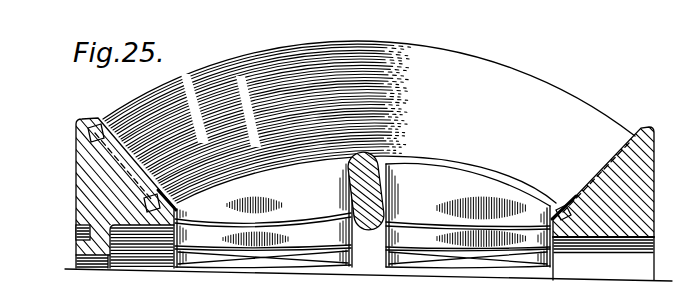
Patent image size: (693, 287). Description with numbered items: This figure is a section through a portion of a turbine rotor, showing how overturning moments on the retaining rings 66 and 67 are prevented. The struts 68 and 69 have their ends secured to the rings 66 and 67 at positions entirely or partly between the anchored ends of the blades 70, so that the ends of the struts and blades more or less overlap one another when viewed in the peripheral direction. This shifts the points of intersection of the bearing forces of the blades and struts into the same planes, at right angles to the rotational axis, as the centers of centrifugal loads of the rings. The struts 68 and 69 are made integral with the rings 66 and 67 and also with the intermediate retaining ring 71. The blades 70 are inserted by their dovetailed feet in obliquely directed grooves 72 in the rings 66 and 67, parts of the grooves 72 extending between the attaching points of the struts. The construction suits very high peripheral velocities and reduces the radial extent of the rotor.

The retaining ring 66 is at (93, 190).
The retaining ring 67 is at (643, 221).
The strut 68 is at (270, 204).
The strut 69 is at (462, 214).
The blade 70 is at (546, 93).
The intermediate retaining ring 71 is at (374, 190).
The groove 72 is at (627, 141).